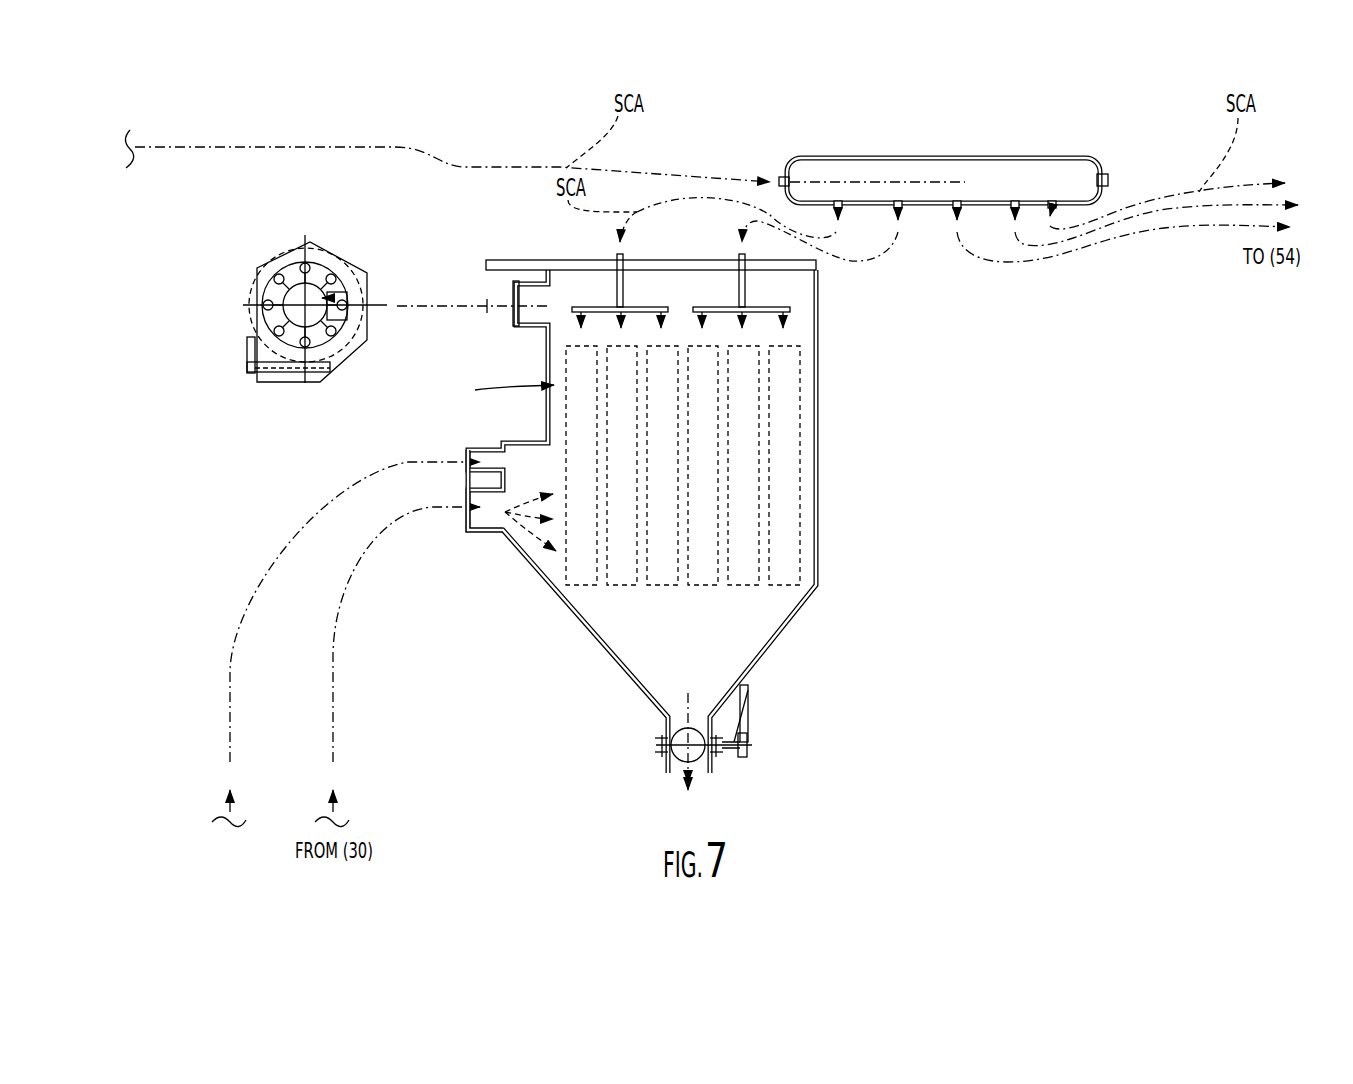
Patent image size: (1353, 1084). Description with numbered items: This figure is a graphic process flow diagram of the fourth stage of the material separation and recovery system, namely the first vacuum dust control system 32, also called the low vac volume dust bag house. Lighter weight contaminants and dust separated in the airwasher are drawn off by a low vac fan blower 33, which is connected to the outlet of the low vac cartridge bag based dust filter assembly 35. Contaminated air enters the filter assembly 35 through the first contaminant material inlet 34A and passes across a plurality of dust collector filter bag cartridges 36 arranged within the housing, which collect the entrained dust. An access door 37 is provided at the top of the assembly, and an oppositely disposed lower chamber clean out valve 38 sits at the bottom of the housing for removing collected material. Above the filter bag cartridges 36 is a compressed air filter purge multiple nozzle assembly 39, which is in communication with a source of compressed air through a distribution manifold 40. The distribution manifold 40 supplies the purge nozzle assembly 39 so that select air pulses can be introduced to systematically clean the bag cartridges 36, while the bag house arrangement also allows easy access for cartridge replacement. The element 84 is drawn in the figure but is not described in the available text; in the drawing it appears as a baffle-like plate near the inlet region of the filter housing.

The first vacuum dust control system 32 is at (850, 400).
The low vac fan blower 33 is at (283, 373).
The first contaminant material inlet 34A is at (470, 533).
The low vac cartridge bag based dust filter assembly 35 is at (502, 390).
The dust collector filter bag cartridges 36 is at (740, 488).
The access door 37 is at (570, 260).
The lower chamber clean out valve 38 is at (675, 766).
The compressed air filter purge multiple nozzle assembly 39 is at (645, 298).
The distribution manifold 40 is at (870, 165).
The inlet baffle 84 is at (516, 326).